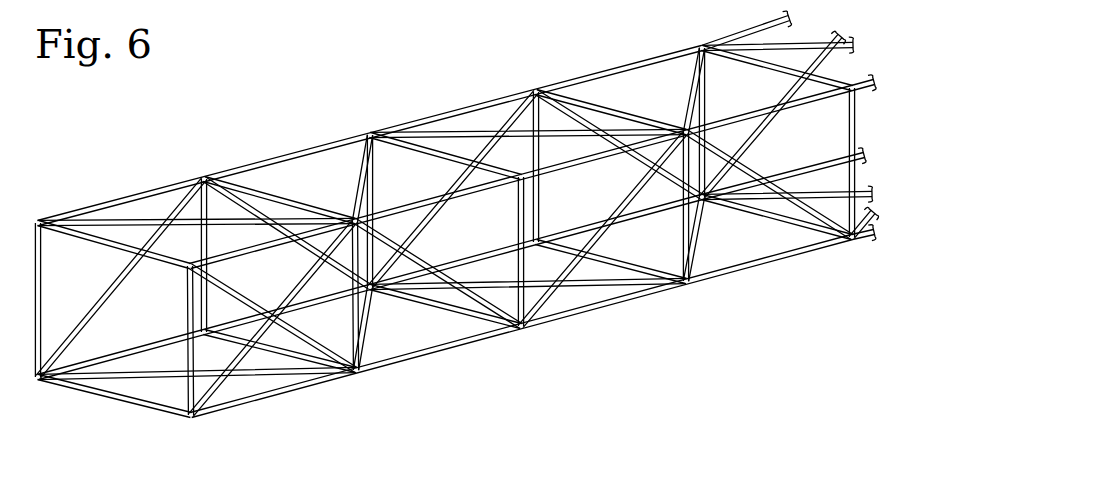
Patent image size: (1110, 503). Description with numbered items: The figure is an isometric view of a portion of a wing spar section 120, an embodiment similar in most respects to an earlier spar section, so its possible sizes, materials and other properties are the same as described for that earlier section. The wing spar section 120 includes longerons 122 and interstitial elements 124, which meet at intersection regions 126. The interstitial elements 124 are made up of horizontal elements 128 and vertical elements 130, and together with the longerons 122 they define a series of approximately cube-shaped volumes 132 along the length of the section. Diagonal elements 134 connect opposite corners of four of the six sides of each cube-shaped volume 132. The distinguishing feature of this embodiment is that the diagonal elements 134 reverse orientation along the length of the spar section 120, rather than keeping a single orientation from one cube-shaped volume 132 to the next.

The wing spar section 120 is at (258, 92).
The longerons 122 is at (478, 104).
The interstitial elements 124 is at (253, 193).
The intersection regions 126 is at (686, 34).
The horizontal elements 128 is at (240, 403).
The vertical elements 130 is at (502, 298).
The cube-shaped volumes 132 is at (321, 128).
The diagonal elements 134 is at (743, 173).